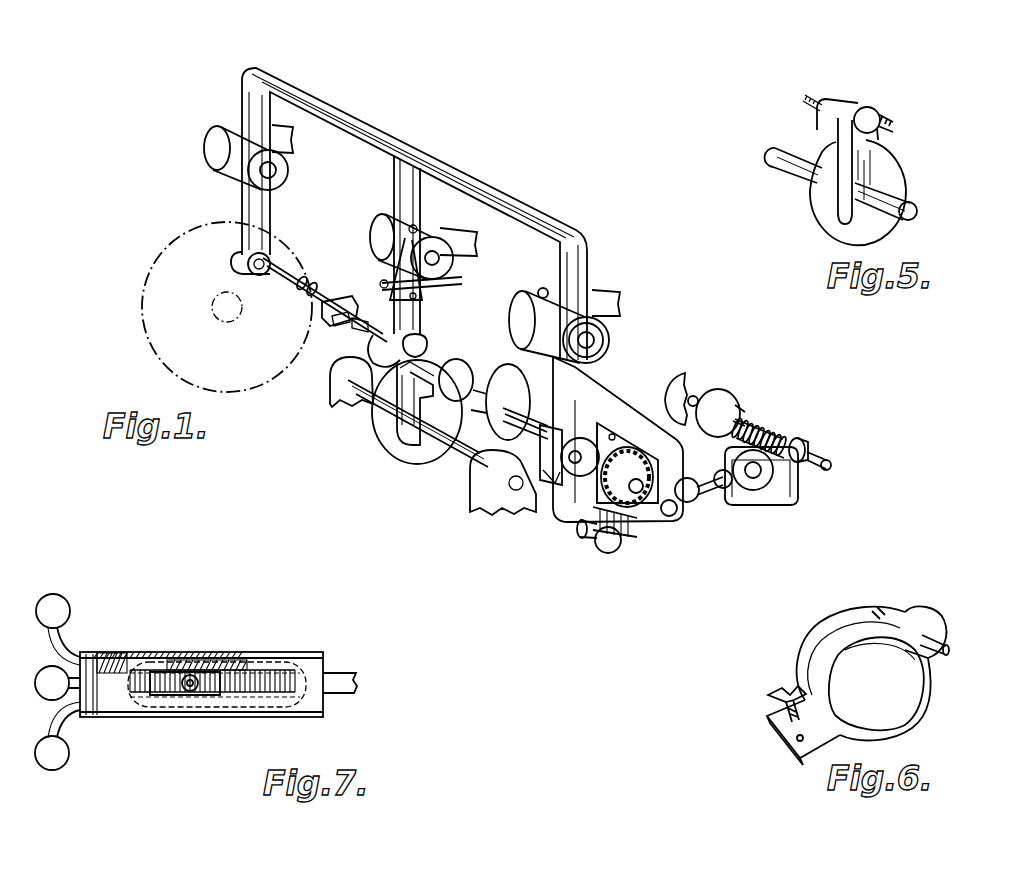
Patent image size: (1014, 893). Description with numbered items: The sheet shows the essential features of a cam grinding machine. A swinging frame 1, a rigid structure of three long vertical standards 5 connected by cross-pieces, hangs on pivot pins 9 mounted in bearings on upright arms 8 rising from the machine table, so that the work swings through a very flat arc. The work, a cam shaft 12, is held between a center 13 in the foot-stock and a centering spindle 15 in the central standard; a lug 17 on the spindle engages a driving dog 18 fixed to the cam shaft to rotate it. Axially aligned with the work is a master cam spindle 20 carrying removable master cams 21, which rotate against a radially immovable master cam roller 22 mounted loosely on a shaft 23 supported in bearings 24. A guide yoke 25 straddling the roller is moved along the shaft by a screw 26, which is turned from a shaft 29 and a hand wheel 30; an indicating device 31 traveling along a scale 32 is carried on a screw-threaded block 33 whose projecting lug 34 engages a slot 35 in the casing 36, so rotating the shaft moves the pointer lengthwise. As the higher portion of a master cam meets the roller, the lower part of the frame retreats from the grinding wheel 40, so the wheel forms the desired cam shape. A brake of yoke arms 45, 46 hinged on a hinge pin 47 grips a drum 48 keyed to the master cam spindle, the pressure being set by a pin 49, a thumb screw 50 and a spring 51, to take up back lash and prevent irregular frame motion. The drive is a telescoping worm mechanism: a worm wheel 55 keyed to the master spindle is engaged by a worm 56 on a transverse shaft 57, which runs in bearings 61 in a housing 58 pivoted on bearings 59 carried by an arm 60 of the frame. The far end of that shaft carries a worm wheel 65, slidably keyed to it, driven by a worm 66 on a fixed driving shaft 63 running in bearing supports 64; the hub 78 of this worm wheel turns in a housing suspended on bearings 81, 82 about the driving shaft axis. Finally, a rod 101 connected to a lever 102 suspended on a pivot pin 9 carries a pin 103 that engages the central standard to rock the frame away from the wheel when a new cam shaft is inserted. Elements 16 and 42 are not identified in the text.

In FIG. 1, the swinging frame 1 is at (498, 196).
In FIG. 1, the vertical standards 5 is at (245, 96).
In FIG. 1, the upright arms 8 is at (214, 142).
In FIG. 1, the pins 9 is at (440, 258).
In FIG. 1, the cam shaft 12 is at (301, 297).
In FIG. 1, the center 13 is at (268, 272).
In FIG. 1, the centering spindle 15 is at (372, 335).
In FIG. 1, the pivot 16 is at (420, 343).
In FIG. 1, the lug 17 is at (350, 330).
In FIG. 1, the driving dog 18 is at (340, 312).
In FIG. 1, the master cam spindle 20 is at (540, 410).
In FIG. 1, the master cams 21 is at (508, 366).
In FIG. 1, the master cam roller 22 is at (400, 452).
In FIG. 5, the master cam roller 22 is at (897, 172).
In FIG. 1, the shaft 23 is at (456, 463).
In FIG. 5, the shaft 23 is at (919, 213).
In FIG. 1, the bearings 24 is at (338, 372).
In FIG. 1, the guide yoke 25 is at (405, 412).
In FIG. 5, the guide yoke 25 is at (837, 212).
In FIG. 5, the screw 26 is at (890, 122).
In FIG. 7, the shaft 29 is at (345, 683).
In FIG. 7, the hand wheel 30 is at (57, 598).
In FIG. 7, the indicating device 31 is at (192, 692).
In FIG. 7, the scale 32 is at (226, 708).
In FIG. 7, the screw-threaded block 33 is at (210, 660).
In FIG. 7, the projecting lug 34 is at (186, 692).
In FIG. 7, the slot 35 is at (297, 727).
In FIG. 7, the casing 36 is at (313, 652).
In FIG. 1, the grinding wheel 40 is at (140, 310).
In FIG. 1, the collar 42 is at (609, 338).
In FIG. 6, the yoke arm 45 is at (912, 705).
In FIG. 6, the yoke arm 46 is at (830, 635).
In FIG. 1, the hinge pin 47 is at (589, 430).
In FIG. 6, the hinge pin 47 is at (951, 650).
In FIG. 1, the drum 48 is at (572, 480).
In FIG. 6, the pin 49 is at (798, 741).
In FIG. 6, the thumb screw 50 is at (770, 695).
In FIG. 6, the spring 51 is at (772, 720).
In FIG. 1, the worm wheel 55 is at (630, 470).
In FIG. 1, the worm 56 is at (630, 540).
In FIG. 1, the transverse shaft 57 is at (582, 532).
In FIG. 1, the housing 58 is at (606, 552).
In FIG. 1, the bearings 59 is at (672, 520).
In FIG. 1, the arm 60 is at (606, 416).
In FIG. 1, the bearings 61 is at (690, 500).
In FIG. 1, the driving shaft 63 is at (831, 463).
In FIG. 1, the bearing supports 64 is at (684, 380).
In FIG. 1, the worm wheel 65 is at (768, 492).
In FIG. 1, the worm 66 is at (771, 435).
In FIG. 1, the hub 78 is at (796, 480).
In FIG. 1, the bearing 81 is at (736, 420).
In FIG. 1, the bearing 82 is at (802, 448).
In FIG. 1, the rod 101 is at (436, 288).
In FIG. 1, the lever 102 is at (395, 266).
In FIG. 1, the pin 103 is at (382, 284).